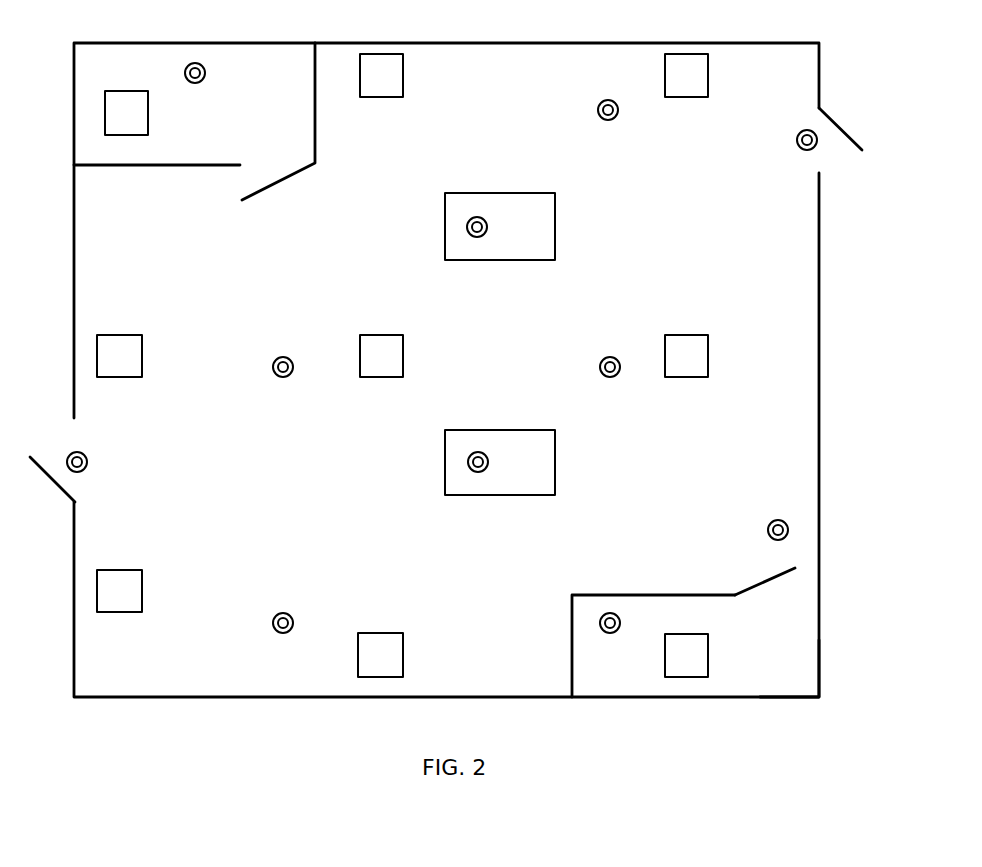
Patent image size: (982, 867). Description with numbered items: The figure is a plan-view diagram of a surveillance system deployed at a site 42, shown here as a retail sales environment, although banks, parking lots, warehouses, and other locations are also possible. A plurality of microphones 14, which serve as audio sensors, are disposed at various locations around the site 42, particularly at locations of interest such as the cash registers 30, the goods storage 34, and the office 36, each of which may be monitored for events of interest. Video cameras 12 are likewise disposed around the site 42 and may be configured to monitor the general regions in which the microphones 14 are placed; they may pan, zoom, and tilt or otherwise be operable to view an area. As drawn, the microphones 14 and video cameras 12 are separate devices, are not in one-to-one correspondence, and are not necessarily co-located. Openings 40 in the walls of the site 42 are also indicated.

The video camera 12 is at (148, 108).
The microphone 14 is at (200, 84).
The cash register 30 is at (515, 193).
The goods storage 34 is at (142, 185).
The office 36 is at (552, 596).
The door opening 40 is at (270, 193).
The site 42 is at (834, 684).